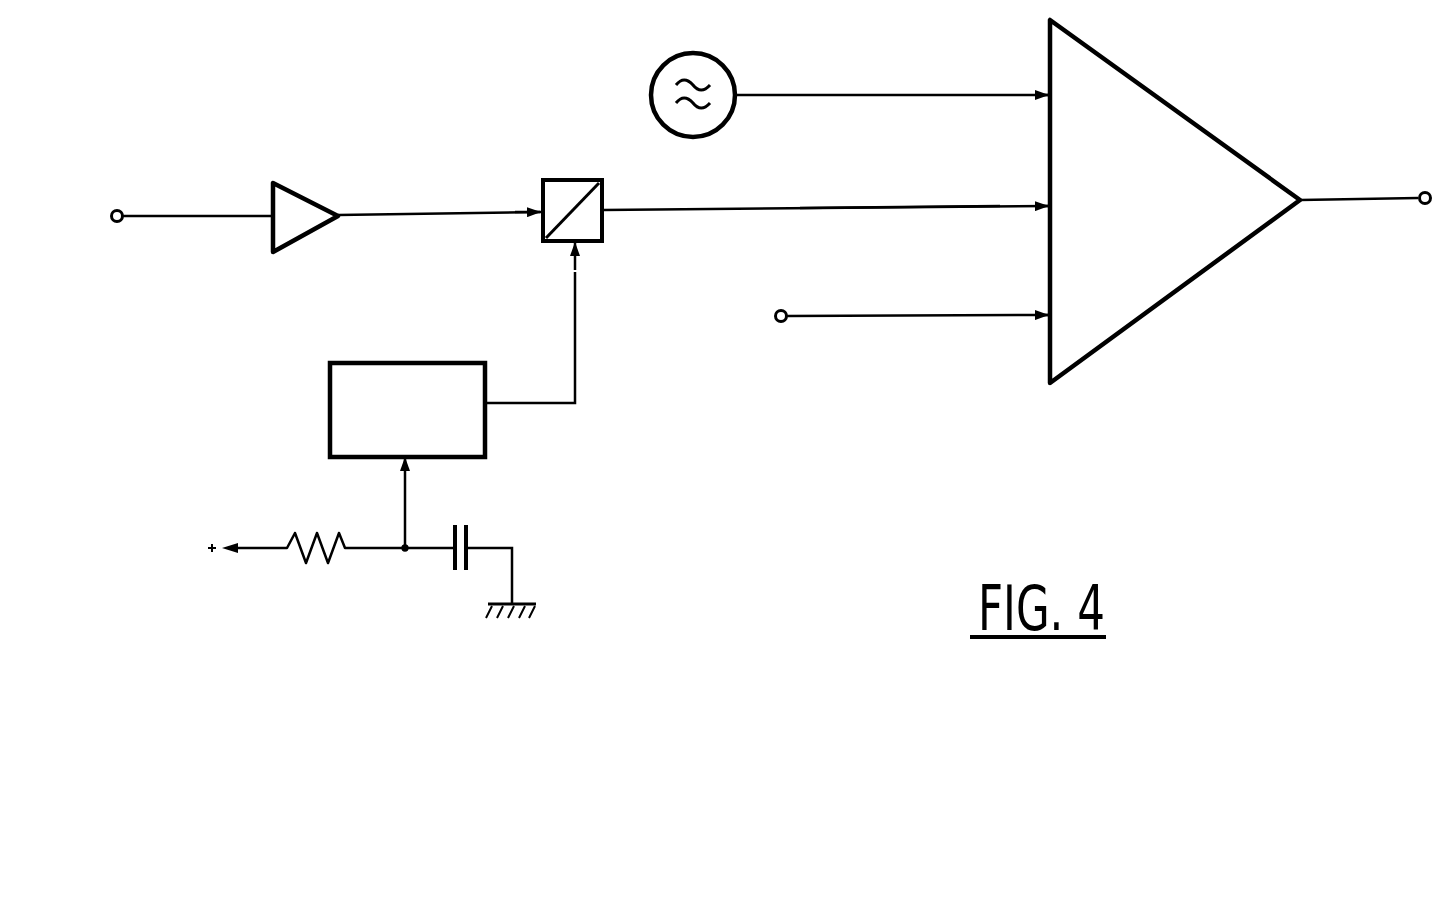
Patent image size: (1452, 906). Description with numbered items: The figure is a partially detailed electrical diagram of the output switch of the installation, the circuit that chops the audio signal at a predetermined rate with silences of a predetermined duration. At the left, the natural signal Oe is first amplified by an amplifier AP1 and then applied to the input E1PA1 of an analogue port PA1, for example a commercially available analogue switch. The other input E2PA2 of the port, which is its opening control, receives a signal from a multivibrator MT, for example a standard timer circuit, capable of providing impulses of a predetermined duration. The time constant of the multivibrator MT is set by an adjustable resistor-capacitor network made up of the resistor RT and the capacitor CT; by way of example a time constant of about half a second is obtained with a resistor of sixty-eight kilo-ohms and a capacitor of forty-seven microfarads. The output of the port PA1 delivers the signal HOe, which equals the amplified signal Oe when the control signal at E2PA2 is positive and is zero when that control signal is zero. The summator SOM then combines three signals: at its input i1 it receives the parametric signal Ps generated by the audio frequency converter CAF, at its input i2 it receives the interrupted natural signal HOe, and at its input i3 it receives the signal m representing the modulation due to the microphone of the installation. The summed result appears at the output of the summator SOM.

The natural signal Oe is at (192, 200).
The amplifier AP1 is at (362, 160).
The analogue port PA1 is at (594, 154).
The input of analogue port E1PA1 is at (540, 214).
The opening control input of analogue port E2PA2 is at (580, 244).
The audio frequency converter CAF is at (748, 30).
The parametric signal Ps is at (900, 93).
The interrupted natural signal HOe is at (918, 178).
The modulation signal m is at (900, 314).
The first input of summator i1 is at (1048, 82).
The second input of summator i2 is at (1048, 200).
The third input of summator i3 is at (1048, 308).
The summator SOM is at (1228, 172).
The multivibrator MT is at (478, 436).
The resistor RT is at (340, 555).
The capacitor CT is at (466, 560).